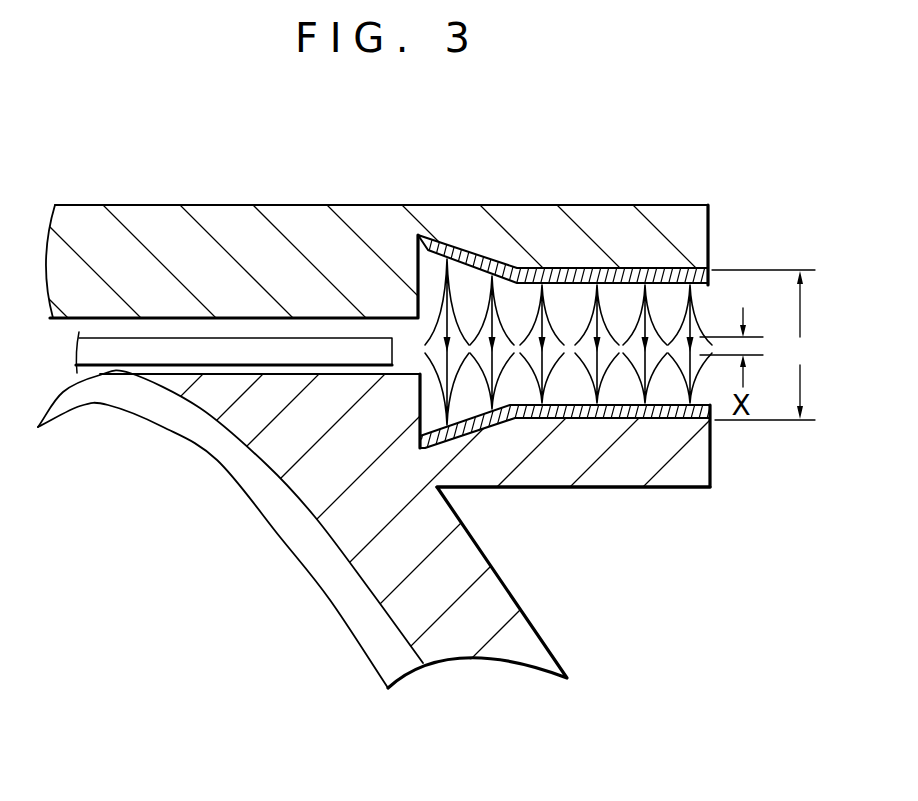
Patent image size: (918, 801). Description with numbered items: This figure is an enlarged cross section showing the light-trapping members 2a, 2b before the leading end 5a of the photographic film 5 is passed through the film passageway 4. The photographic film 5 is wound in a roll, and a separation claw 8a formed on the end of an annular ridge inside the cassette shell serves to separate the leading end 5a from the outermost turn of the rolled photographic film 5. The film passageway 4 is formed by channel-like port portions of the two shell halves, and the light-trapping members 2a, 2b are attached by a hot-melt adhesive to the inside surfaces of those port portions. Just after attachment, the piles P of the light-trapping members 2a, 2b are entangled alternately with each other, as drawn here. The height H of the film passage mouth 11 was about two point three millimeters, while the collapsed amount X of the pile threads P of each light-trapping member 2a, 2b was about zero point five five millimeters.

The light-trapping member 2a is at (647, 413).
The light-trapping member 2b is at (580, 267).
The film passageway 4 is at (570, 383).
The photographic film 5 is at (173, 337).
The leading end 5a is at (303, 365).
The separation claw 8a is at (108, 393).
The film passage mouth 11 is at (708, 313).
The piles P is at (537, 307).